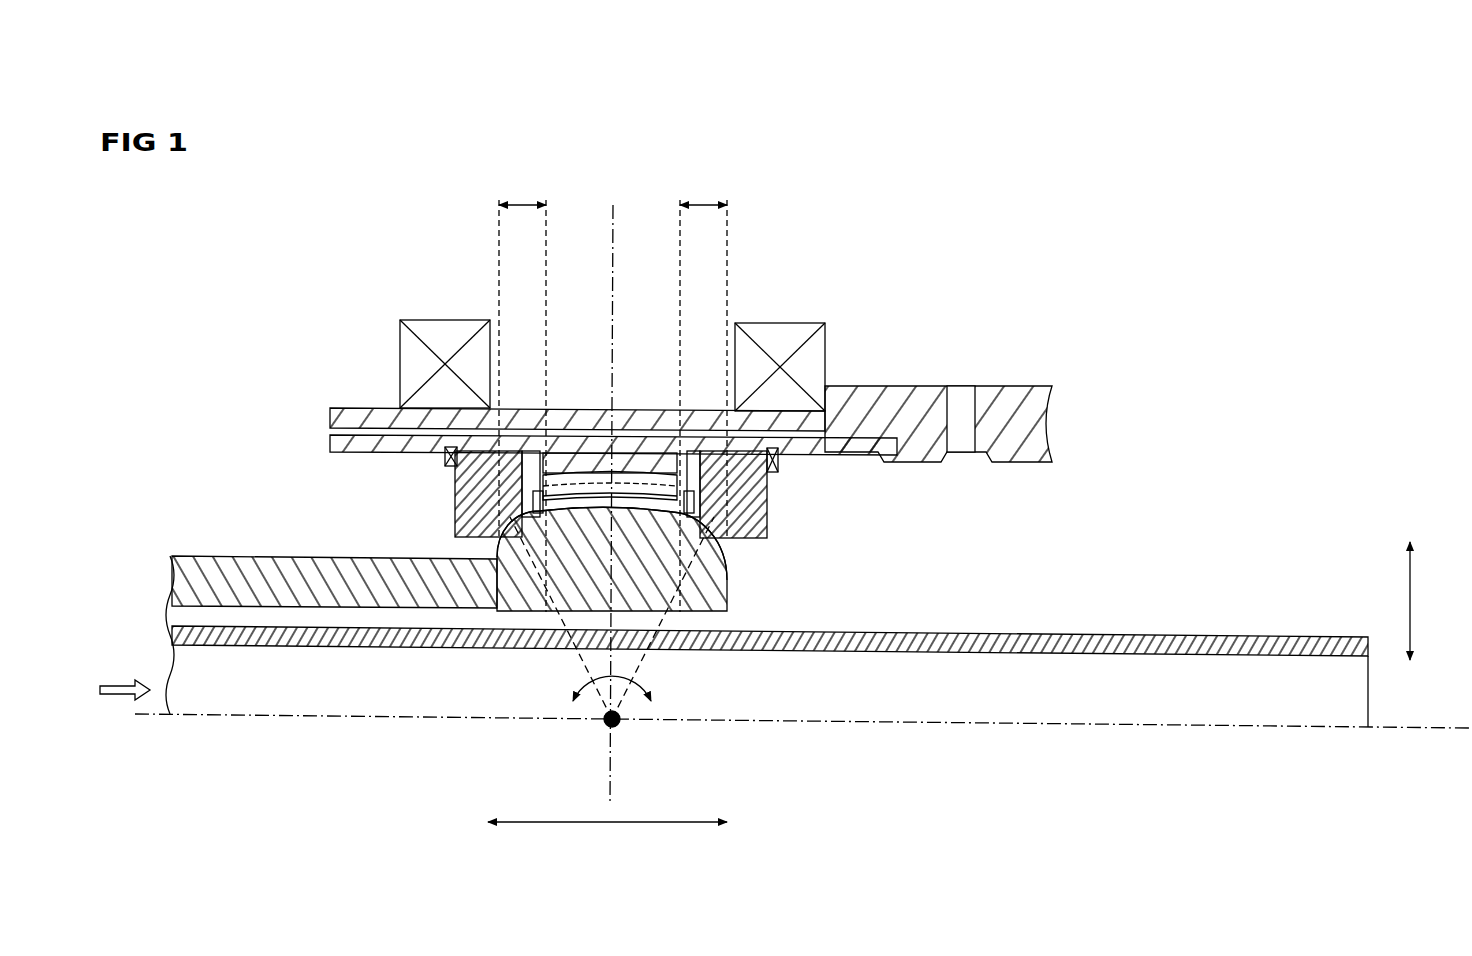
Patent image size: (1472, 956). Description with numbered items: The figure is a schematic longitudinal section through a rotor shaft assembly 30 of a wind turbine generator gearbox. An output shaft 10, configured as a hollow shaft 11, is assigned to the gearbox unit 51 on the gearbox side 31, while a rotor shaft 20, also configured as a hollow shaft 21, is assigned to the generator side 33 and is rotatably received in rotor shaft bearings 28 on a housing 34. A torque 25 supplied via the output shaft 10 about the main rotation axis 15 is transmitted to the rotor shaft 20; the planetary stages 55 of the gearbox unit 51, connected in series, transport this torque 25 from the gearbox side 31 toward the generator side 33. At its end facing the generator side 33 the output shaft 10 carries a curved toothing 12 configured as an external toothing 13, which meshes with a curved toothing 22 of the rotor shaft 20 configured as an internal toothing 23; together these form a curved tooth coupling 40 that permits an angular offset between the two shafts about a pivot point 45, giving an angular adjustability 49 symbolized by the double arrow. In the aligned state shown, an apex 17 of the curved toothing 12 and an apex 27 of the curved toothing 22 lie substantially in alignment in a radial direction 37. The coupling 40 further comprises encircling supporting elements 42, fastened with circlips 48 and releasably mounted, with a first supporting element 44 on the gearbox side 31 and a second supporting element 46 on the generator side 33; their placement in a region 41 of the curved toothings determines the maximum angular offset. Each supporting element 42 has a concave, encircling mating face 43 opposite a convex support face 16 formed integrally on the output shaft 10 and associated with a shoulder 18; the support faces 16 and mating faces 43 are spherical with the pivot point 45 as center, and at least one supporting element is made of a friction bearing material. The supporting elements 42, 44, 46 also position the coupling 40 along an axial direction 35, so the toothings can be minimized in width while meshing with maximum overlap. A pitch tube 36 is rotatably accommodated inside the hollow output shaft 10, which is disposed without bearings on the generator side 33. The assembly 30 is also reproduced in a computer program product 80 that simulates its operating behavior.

The output shaft 10 is at (331, 612).
The hollow shaft 11 is at (246, 557).
The curved toothing 12 is at (612, 559).
The external toothing 13 is at (537, 520).
The main rotation axis 15 is at (1392, 728).
The support face 16 is at (493, 540).
The apex 17 is at (622, 473).
The shoulder 18 is at (529, 648).
The rotor shaft 20 is at (568, 440).
The hollow shaft 21 is at (333, 440).
The curved toothing 22 is at (610, 430).
The internal toothing 23 is at (592, 473).
The torque 25 is at (118, 686).
The apex 27 is at (621, 514).
The rotor shaft bearings 28 is at (400, 350).
The rotor shaft assembly 30 is at (270, 167).
The gearbox side 31 is at (385, 167).
The generator side 33 is at (1069, 172).
The housing 34 is at (627, 171).
The axial direction 35 is at (612, 825).
The pitch tube 36 is at (1196, 640).
The radial direction 37 is at (1412, 600).
The curved tooth coupling 40 is at (645, 455).
The region 41 is at (527, 205).
The supporting elements 42 is at (617, 494).
The mating face 43 is at (470, 512).
The first supporting element 44 is at (488, 494).
The pivot point 45 is at (622, 725).
The second supporting element 46 is at (733, 494).
The circlips 48 is at (450, 464).
The angular adjustability 49 is at (598, 710).
The gearbox unit 51 is at (385, 205).
The planetary stages 55 is at (1069, 211).
The computer program product 80 is at (1170, 398).